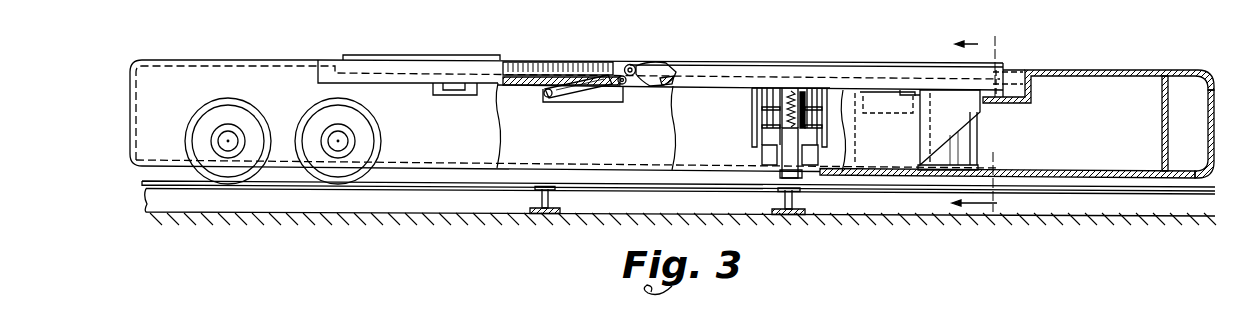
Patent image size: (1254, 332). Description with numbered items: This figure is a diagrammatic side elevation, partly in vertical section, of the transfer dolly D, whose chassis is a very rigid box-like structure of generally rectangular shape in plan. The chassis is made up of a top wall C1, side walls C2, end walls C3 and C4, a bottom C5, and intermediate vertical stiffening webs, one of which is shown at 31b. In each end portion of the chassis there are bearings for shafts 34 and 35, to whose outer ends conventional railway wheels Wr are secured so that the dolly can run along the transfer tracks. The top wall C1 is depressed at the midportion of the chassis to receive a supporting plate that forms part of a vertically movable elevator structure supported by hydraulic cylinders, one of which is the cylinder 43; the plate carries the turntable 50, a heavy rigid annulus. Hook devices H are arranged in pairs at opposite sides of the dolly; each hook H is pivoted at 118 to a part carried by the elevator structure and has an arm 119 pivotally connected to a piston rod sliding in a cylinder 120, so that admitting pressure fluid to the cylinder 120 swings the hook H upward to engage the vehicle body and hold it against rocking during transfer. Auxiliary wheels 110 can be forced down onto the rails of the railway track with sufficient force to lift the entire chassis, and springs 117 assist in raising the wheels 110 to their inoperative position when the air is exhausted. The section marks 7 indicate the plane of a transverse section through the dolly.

The transfer dolly D is at (277, 51).
The side walls C2 is at (141, 138).
The end wall C3 is at (134, 100).
The railway wheels Wr is at (398, 112).
The shaft 34 is at (222, 143).
The shaft 35 is at (325, 131).
The turntable 50 is at (873, 67).
The hook pivot 118 is at (626, 66).
The hook device H is at (655, 68).
The hook arm 119 is at (624, 87).
The hook cylinder 120 is at (550, 98).
The spring 117 is at (797, 90).
The wheel 110 is at (786, 165).
The intermediate vertical stiffening web 31b is at (960, 118).
The hydraulic cylinder 43 is at (978, 150).
The top wall C1 is at (1087, 70).
The end wall C4 is at (1215, 115).
The bottom C5 is at (1082, 170).
The section line 7- 7 is at (960, 123).